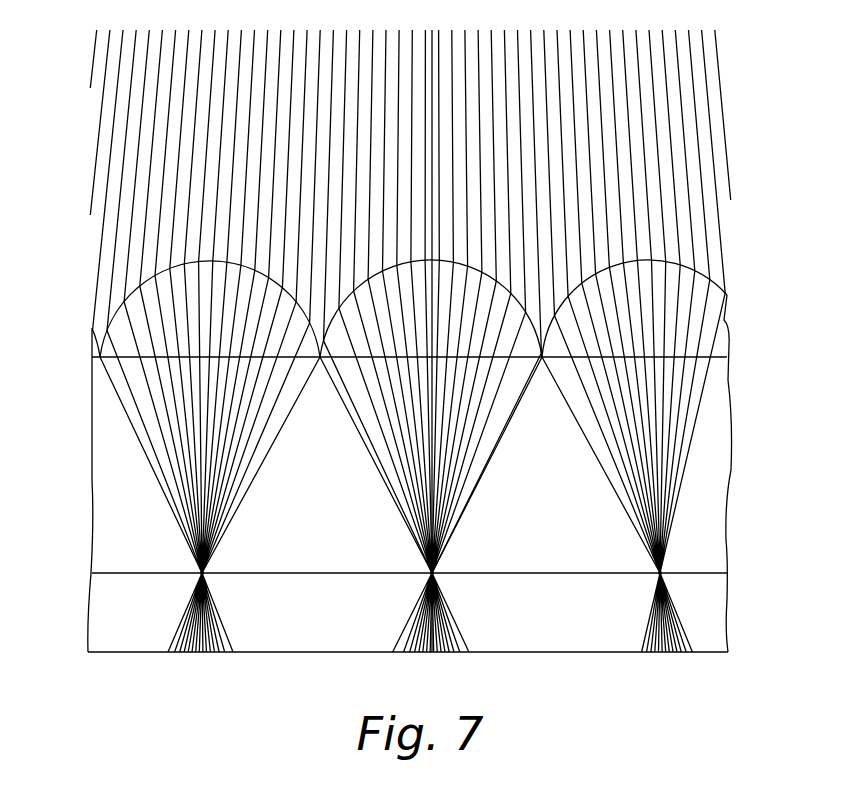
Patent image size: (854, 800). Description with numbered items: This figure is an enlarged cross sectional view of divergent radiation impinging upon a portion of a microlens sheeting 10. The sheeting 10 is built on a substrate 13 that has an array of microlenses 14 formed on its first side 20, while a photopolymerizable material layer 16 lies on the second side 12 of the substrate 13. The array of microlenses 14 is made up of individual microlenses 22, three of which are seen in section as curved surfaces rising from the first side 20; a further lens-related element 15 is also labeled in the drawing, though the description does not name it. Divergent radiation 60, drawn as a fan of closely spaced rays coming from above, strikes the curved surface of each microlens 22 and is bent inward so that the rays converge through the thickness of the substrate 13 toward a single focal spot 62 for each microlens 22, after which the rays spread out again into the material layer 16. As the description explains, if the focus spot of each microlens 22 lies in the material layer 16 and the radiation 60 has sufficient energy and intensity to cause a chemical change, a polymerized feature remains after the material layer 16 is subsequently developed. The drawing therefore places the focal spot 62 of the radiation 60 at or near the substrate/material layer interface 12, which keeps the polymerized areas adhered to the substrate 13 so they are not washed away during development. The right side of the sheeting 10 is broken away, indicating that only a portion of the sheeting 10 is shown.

The microlens sheeting 10 is at (740, 288).
The second side of the substrate 12 is at (700, 572).
The substrate 13 is at (718, 475).
The array of microlenses 14 is at (700, 275).
The lenslet 15 is at (133, 307).
The photopolymerizable material layer 16 is at (712, 620).
The first side of the substrate 20 is at (705, 357).
The individual microlens 22 is at (192, 260).
The radiation 60 is at (698, 162).
The focal spot 62 is at (202, 577).